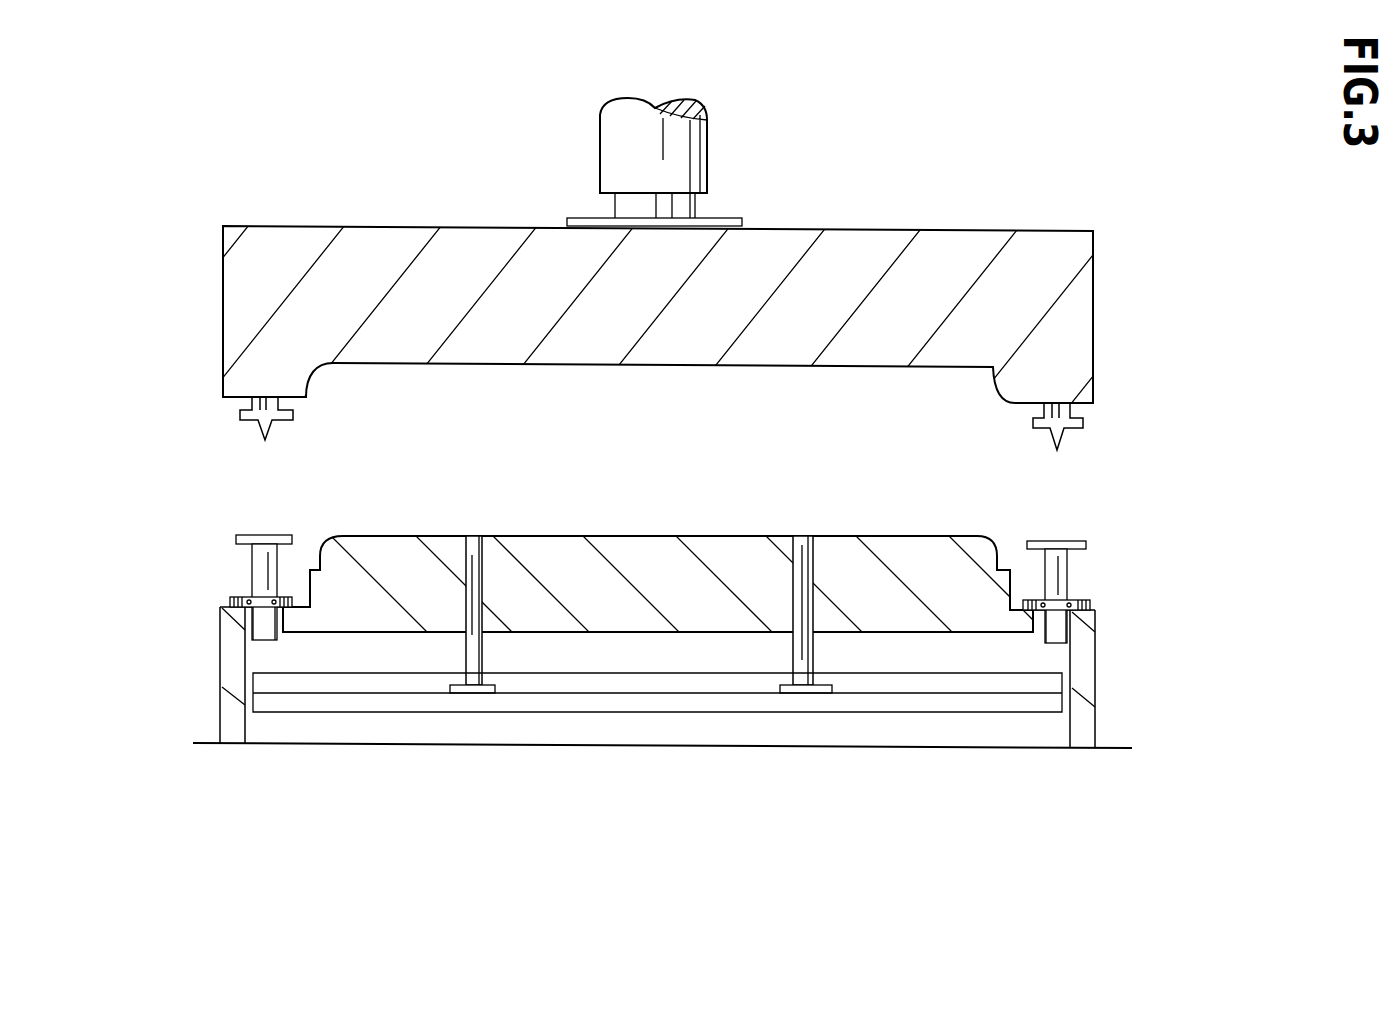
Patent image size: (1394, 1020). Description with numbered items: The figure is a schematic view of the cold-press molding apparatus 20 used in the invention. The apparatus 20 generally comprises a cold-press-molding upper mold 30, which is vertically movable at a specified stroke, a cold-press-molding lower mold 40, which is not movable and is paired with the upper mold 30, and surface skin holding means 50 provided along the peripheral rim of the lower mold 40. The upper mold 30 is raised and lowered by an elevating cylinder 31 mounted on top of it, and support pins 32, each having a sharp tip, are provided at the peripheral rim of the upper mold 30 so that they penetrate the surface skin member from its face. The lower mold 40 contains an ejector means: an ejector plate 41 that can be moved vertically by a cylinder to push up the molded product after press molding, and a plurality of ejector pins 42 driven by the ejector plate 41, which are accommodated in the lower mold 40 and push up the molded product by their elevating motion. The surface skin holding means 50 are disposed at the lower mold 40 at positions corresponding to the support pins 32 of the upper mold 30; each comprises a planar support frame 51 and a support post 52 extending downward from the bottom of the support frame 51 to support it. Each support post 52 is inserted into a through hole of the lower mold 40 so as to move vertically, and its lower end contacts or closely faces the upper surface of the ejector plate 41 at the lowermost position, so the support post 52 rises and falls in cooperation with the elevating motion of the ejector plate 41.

The cold-press molding apparatus 20 is at (243, 775).
The cold-press-molding upper mold 30 is at (243, 316).
The elevating cylinder 31 is at (622, 158).
The support pins 32 is at (272, 428).
The cold-press-molding lower mold 40 is at (611, 562).
The ejector plate 41 is at (611, 700).
The ejector pins 42 is at (802, 598).
The surface skin holding means 50 is at (656, 563).
The support frame 51 is at (255, 533).
The support post 52 is at (273, 568).